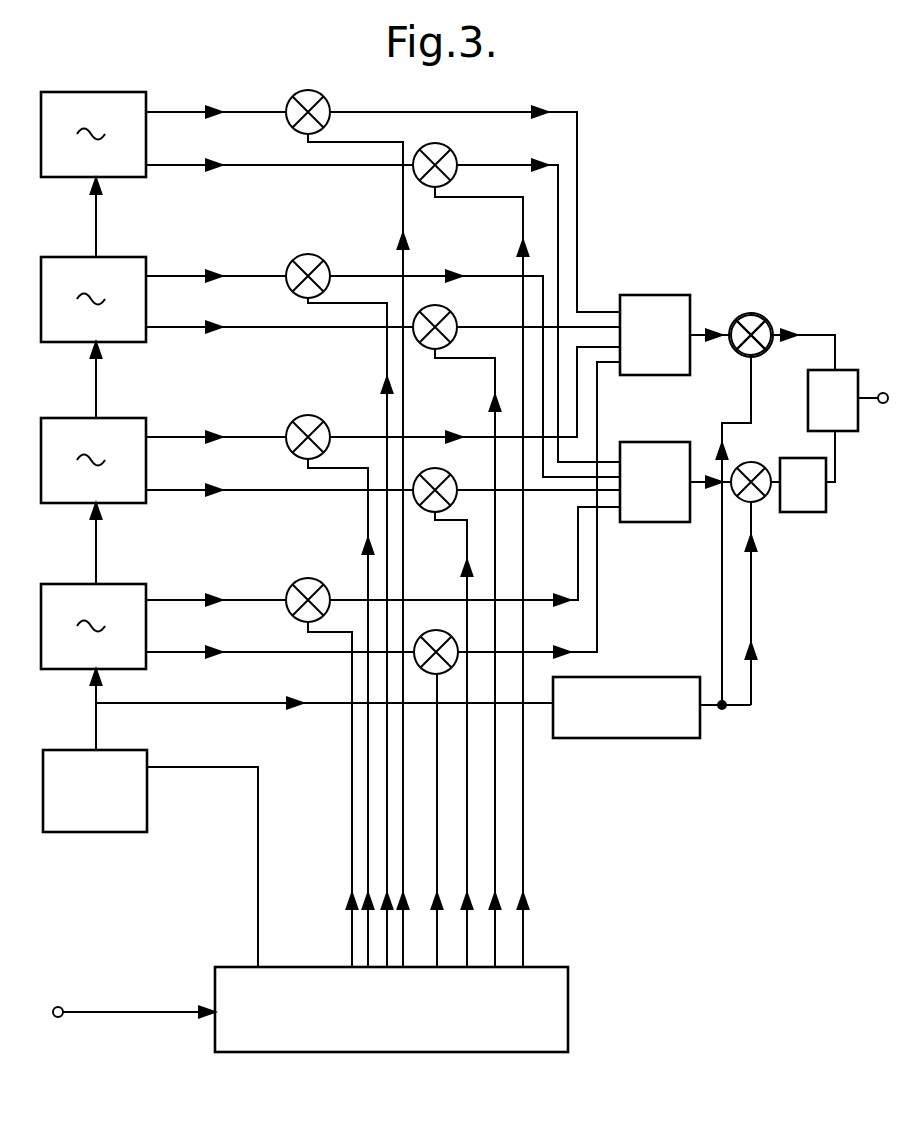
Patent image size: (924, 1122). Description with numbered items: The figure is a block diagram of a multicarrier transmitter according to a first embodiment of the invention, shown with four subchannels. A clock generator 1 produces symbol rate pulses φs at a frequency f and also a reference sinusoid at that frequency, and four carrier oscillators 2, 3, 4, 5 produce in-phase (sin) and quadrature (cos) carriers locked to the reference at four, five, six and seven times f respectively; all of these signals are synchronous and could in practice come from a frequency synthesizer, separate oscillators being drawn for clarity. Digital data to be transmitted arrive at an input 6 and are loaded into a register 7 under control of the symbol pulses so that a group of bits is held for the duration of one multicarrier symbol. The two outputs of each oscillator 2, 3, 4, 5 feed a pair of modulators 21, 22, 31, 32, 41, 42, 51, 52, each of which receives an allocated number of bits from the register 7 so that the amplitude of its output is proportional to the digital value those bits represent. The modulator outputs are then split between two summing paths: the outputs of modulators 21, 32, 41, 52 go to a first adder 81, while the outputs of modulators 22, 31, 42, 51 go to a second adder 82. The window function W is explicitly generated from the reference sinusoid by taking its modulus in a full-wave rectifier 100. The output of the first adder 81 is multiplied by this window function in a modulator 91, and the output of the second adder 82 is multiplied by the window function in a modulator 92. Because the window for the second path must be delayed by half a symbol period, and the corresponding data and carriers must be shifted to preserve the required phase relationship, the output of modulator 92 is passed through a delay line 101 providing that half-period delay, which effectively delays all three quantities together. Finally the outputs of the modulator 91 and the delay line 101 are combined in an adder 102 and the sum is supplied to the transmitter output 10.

The clock generator 1 is at (57, 750).
The carrier oscillator 2 is at (58, 92).
The carrier oscillator 3 is at (58, 257).
The carrier oscillator 4 is at (58, 418).
The carrier oscillator 5 is at (58, 584).
The input 6 is at (61, 1006).
The register 7 is at (365, 1052).
The output 10 is at (884, 404).
The modulator 21 is at (298, 91).
The modulator 22 is at (452, 149).
The modulator 31 is at (298, 255).
The modulator 32 is at (452, 311).
The modulator 41 is at (298, 416).
The modulator 42 is at (427, 468).
The modulator 51 is at (298, 579).
The modulator 52 is at (424, 630).
The first adder 81 is at (655, 295).
The second adder 82 is at (658, 522).
The modulator 91 is at (753, 315).
The modulator 92 is at (753, 462).
The full-wave rectifier 100 is at (655, 738).
The delay line 101 is at (800, 512).
The adder 102 is at (861, 377).